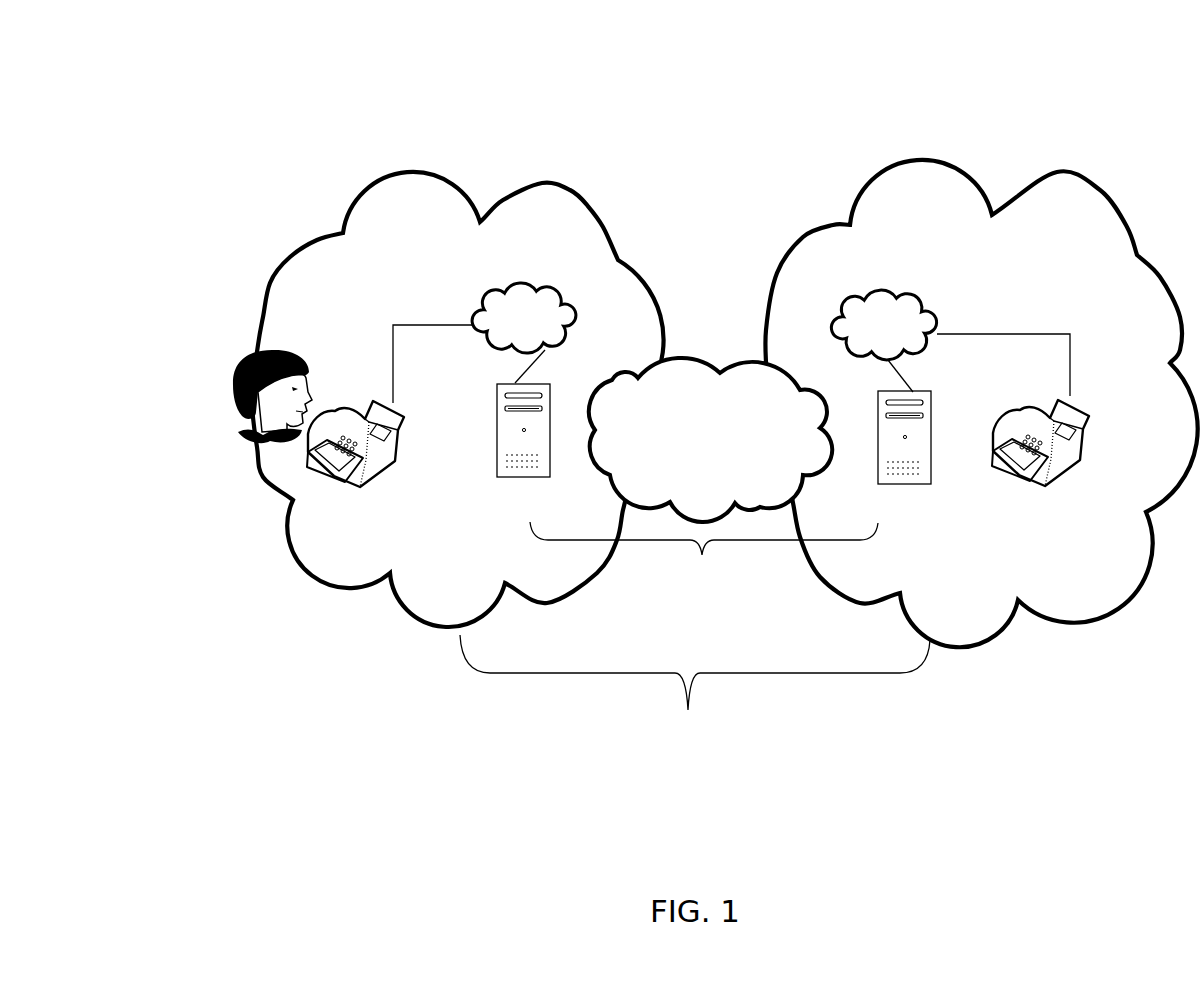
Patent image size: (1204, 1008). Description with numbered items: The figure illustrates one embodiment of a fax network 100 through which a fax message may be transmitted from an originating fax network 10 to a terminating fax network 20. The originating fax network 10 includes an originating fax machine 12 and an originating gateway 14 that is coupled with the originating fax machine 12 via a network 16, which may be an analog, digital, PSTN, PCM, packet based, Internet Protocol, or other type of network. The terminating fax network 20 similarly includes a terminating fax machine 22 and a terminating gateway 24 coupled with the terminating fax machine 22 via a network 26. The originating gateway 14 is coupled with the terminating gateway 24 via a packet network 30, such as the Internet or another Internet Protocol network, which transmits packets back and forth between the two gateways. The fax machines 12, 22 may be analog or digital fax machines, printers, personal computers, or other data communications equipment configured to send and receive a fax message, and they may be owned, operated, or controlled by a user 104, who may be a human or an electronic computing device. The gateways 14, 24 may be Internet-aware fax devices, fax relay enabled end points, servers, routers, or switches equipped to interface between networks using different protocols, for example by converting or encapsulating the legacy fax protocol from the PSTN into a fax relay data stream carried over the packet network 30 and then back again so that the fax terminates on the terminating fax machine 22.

The fax network 100 is at (401, 52).
The originating fax network 10 is at (442, 175).
The terminating fax network 20 is at (955, 177).
The packet network 30 is at (728, 358).
The originating fax machine 12 is at (355, 392).
The originating gateway 14 is at (486, 490).
The network 16 is at (557, 271).
The terminating fax machine 22 is at (1079, 395).
The terminating gateway 24 is at (935, 502).
The network 26 is at (900, 276).
The user 104 is at (212, 397).